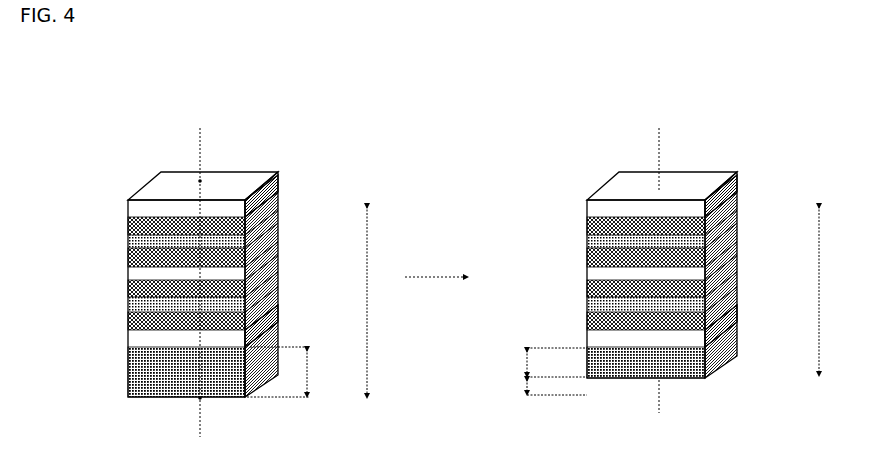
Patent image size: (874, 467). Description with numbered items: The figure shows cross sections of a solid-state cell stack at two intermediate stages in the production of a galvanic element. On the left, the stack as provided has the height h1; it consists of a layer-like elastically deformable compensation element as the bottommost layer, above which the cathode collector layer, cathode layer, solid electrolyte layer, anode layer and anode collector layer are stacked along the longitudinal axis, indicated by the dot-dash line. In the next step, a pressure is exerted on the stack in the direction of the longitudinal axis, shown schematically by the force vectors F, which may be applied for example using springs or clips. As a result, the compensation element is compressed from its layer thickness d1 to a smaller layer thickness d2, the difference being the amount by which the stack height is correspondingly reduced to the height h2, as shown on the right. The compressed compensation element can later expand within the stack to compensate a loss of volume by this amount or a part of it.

The force vector F is at (207, 282).
The height of the solid-state cell stack as provided h1 is at (376, 301).
The height of the solid-state cell stack after compression h2 is at (829, 290).
The layer thickness of the compensation element before compression d1 is at (287, 372).
The layer thickness of the compensation element after compression d2 is at (541, 362).